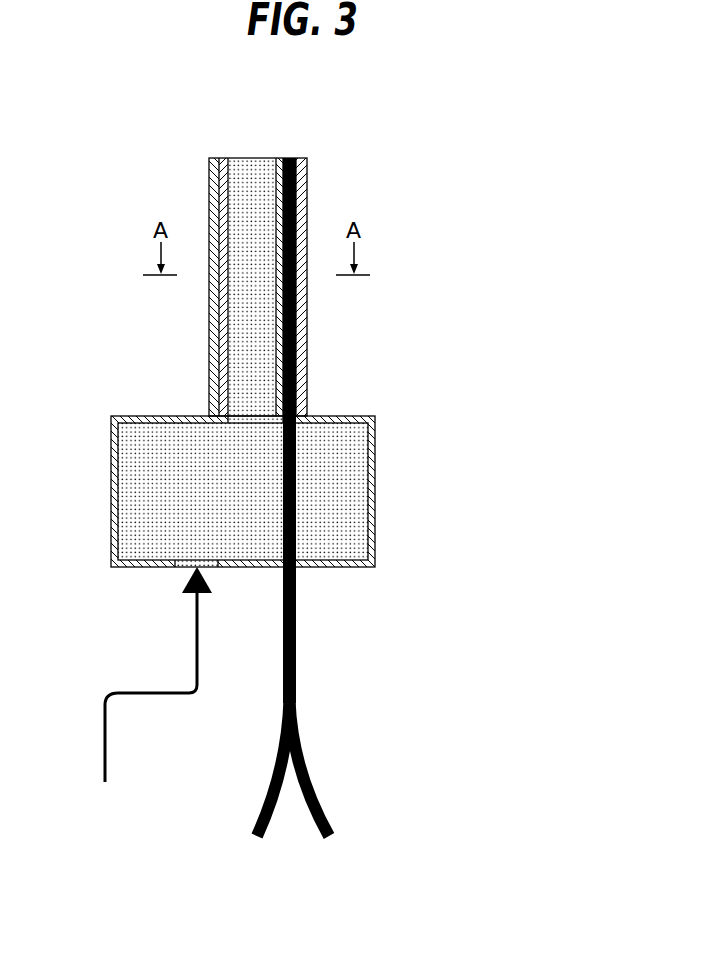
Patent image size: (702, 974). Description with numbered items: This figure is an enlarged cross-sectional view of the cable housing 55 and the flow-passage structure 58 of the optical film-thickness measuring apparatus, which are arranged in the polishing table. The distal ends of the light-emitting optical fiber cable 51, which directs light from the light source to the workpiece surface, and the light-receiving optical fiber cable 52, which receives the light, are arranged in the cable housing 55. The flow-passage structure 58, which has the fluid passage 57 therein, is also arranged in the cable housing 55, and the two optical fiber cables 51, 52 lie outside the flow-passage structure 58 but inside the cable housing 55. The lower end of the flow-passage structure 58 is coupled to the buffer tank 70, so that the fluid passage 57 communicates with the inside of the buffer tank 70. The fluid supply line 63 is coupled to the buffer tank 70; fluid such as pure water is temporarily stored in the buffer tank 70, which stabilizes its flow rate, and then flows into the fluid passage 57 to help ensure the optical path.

The light-emitting optical fiber cable 51 is at (317, 798).
The light-receiving optical fiber cable 52 is at (268, 788).
The cable housing 55 is at (213, 259).
The fluid passage 57 is at (263, 253).
The flow-passage structure 58 is at (233, 172).
The fluid supply line 63 is at (196, 641).
The buffer tank 70 is at (111, 470).